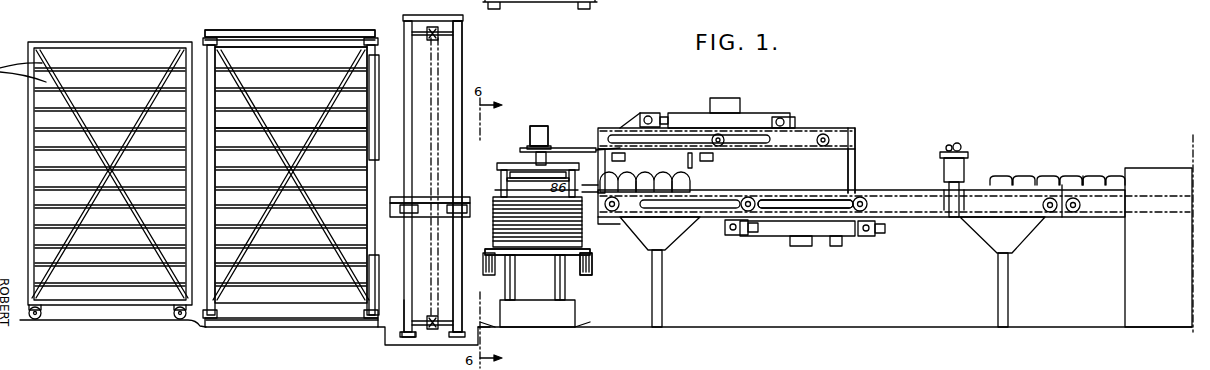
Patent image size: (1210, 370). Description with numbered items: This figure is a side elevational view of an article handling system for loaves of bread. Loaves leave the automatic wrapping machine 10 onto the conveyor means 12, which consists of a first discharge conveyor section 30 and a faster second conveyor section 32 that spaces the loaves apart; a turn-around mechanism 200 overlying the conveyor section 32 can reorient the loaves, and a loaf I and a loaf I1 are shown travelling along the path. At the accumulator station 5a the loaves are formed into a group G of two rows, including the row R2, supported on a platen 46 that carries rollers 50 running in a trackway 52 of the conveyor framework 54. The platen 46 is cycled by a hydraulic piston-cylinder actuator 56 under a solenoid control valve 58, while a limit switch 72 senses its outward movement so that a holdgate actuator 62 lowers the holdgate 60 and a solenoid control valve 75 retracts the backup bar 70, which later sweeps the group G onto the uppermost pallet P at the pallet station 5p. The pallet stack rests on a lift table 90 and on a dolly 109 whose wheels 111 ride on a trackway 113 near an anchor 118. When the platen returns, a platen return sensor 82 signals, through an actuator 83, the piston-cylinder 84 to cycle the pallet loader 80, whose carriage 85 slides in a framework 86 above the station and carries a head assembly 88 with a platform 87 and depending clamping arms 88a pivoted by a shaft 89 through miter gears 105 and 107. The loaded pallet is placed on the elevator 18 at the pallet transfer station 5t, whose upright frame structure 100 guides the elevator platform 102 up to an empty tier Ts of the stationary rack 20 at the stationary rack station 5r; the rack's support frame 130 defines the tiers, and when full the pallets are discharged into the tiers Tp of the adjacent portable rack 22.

The portable rack 22 is at (113, 40).
The tiers of the portable rack Tp is at (120, 298).
The stationary rack 20 is at (278, 30).
The support frame 130 is at (226, 30).
The stationary rack station 5r is at (337, 33).
The tiers of the stationary rack Ts is at (372, 110).
The elevator 18 is at (464, 44).
The upright frame structure 100 is at (463, 70).
The elevator platform 102 is at (400, 218).
The pallet transfer station 5t is at (412, 315).
The pallet station 5p is at (535, 256).
The lift table 90 is at (547, 256).
The wheels 111 is at (487, 275).
The dolly 109 is at (593, 262).
The trackway 113 is at (492, 324).
The base anchor 118 is at (583, 325).
The head assembly 88 is at (530, 145).
The miter gear 107 is at (540, 126).
The miter gear 105 is at (560, 148).
The carriage 85 is at (582, 130).
The platform 87 is at (500, 166).
The clamping arms 88a is at (510, 180).
The shaft 89 is at (538, 185).
The pallet P is at (533, 200).
The backup bar 70 is at (600, 162).
The pallet loader 80 is at (608, 125).
The piston-cylinder 84 is at (755, 118).
The actuator 83 is at (724, 98).
The framework 86 is at (848, 136).
The solenoid control valve 75 is at (625, 158).
The holdgate actuator 62 is at (713, 157).
The holdgate 60 is at (692, 164).
The group of loaves G is at (650, 175).
The conveyor framework 54 is at (900, 190).
The rollers 50 is at (750, 196).
The trackway 52 is at (795, 200).
The first discharge conveyor section 30 is at (1105, 220).
The hydraulic piston-cylinder actuator 56 is at (810, 230).
The solenoid control valve 58 is at (795, 246).
The platen return sensor 82 is at (836, 246).
The limit switch 72 is at (736, 236).
The platen 46 is at (605, 216).
The accumulator station 5a is at (630, 214).
The second row R2 is at (658, 194).
The loaf I1 is at (675, 196).
The second conveyor section 32 is at (905, 215).
The turn-around mechanism 200 is at (945, 152).
The conveyor means 12 is at (1067, 153).
The loaf item I is at (1112, 176).
The automatic wrapping machine 10 is at (1186, 243).